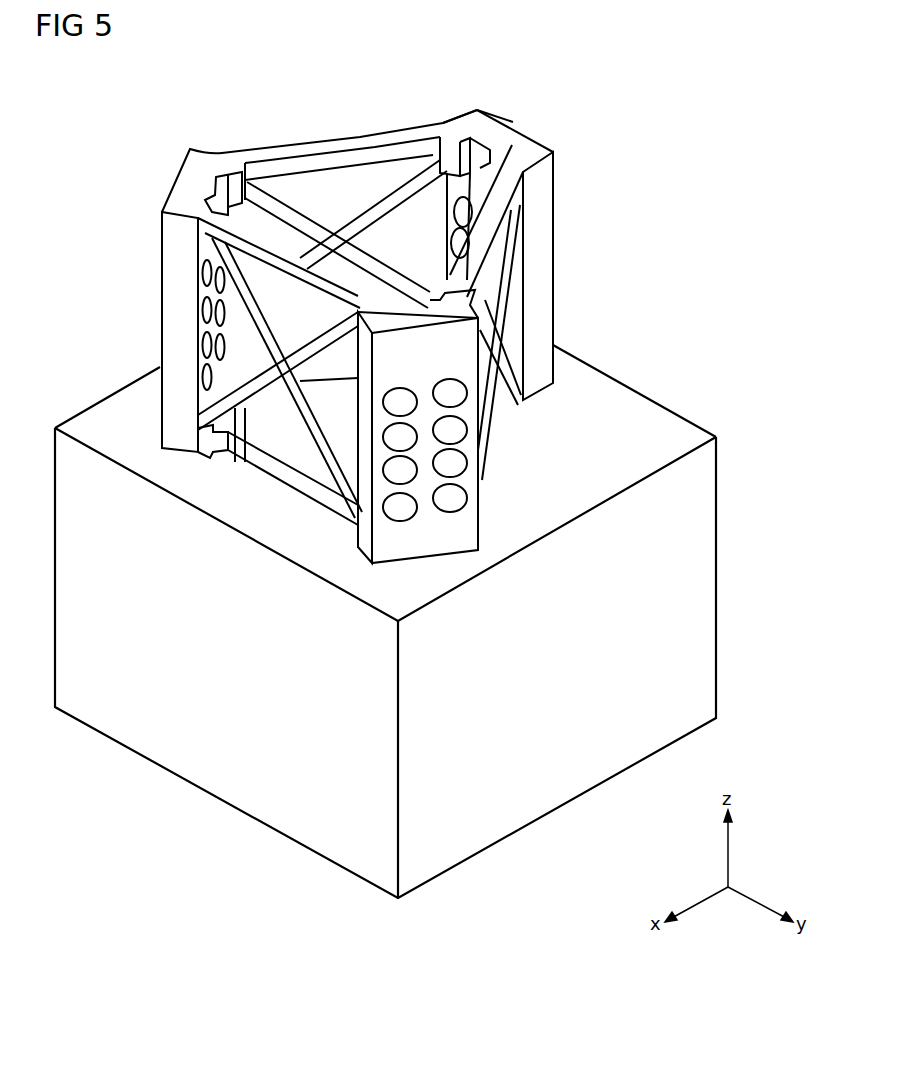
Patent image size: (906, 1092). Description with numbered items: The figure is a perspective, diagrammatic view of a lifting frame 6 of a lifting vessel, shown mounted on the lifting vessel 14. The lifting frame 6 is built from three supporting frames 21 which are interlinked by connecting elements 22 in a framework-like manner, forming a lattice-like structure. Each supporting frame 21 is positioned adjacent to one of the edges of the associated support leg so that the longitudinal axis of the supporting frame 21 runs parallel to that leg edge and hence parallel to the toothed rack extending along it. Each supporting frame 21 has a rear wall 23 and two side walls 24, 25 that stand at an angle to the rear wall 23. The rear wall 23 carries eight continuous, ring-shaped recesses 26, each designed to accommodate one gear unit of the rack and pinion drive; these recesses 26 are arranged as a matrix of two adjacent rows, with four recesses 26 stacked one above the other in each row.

The lifting frame 6 is at (371, 312).
The lifting vessel 14 is at (647, 413).
The supporting frame 21 is at (400, 312).
The connecting element 22 is at (308, 152).
The rear wall 23 is at (515, 120).
The side wall 24 is at (458, 113).
The side wall 25 is at (545, 300).
The recess 26 is at (458, 495).